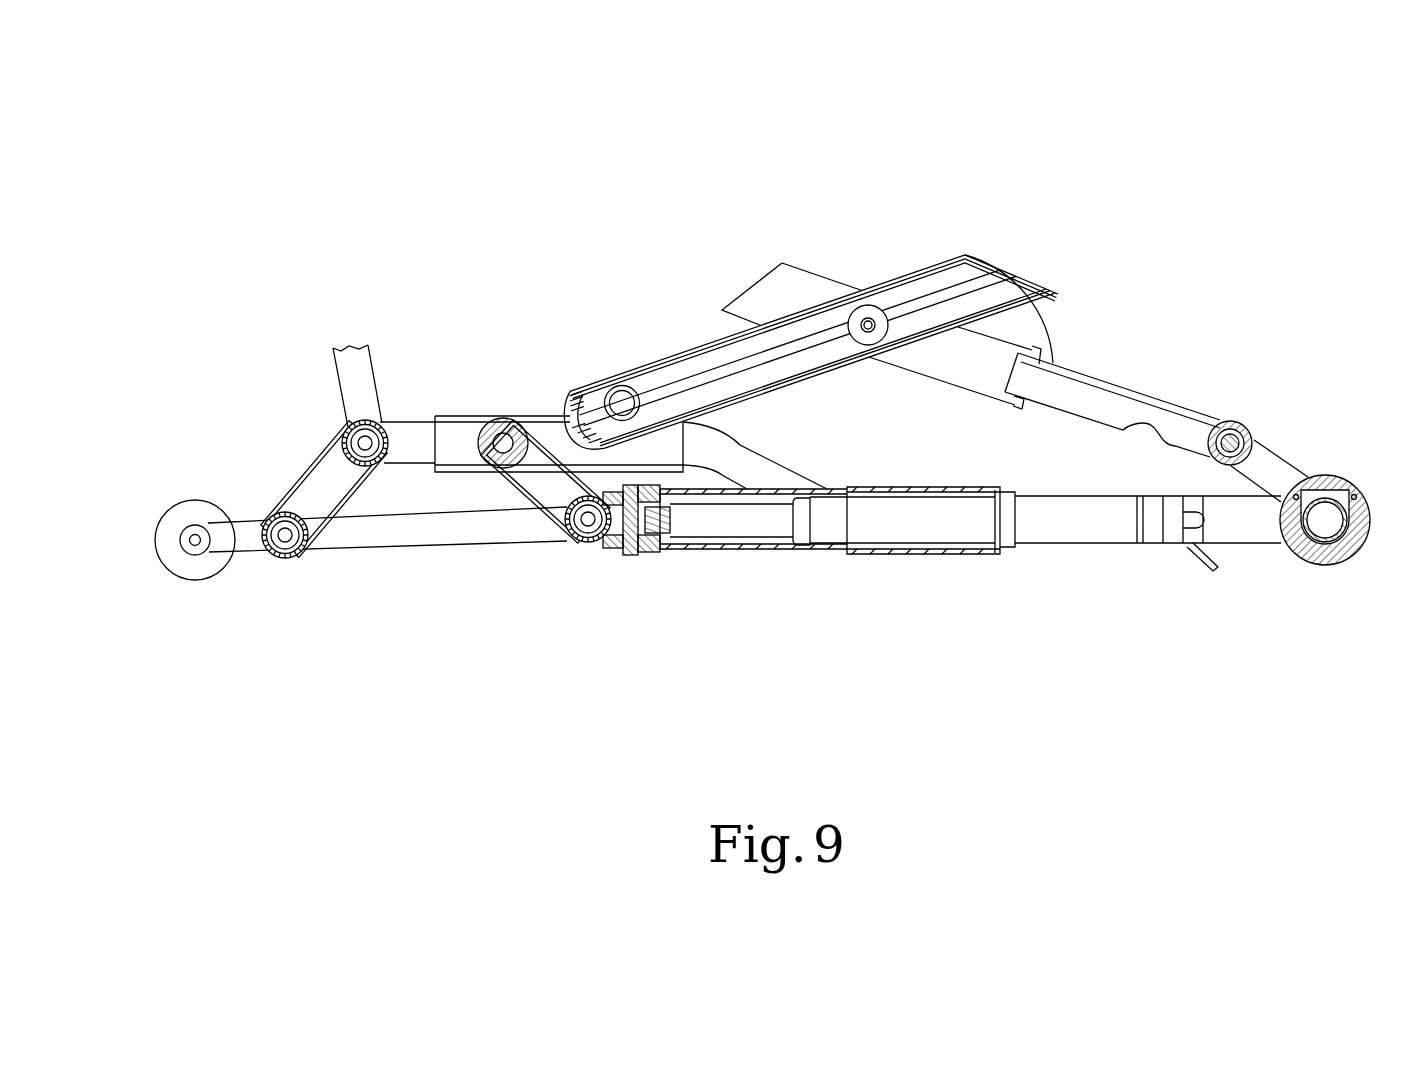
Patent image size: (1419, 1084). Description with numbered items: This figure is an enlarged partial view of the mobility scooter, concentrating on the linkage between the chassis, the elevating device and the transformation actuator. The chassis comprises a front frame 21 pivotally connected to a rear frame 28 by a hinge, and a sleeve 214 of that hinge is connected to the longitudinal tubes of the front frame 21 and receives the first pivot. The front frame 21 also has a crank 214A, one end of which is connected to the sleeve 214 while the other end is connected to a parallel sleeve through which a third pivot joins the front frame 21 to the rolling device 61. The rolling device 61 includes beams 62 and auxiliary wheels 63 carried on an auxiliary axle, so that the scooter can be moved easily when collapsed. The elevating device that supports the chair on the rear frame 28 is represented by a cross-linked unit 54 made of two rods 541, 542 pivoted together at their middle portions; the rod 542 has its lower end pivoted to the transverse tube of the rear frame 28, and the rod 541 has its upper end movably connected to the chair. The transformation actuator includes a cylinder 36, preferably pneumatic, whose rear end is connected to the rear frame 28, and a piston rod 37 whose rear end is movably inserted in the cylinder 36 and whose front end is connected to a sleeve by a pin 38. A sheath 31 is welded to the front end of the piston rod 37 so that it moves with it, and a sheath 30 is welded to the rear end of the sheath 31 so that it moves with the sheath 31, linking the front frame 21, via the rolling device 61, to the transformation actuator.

The front frame 21 is at (380, 377).
The sleeve 214 is at (345, 427).
The crank 214A is at (322, 488).
The rear frame 28 is at (1297, 562).
The sheath 30 is at (992, 555).
The sheath 31 is at (685, 550).
The cylinder 36 is at (930, 532).
The piston rod 37 is at (750, 525).
The pin 38 is at (623, 556).
The cross-linked unit 54 is at (943, 184).
The rod 541 is at (798, 328).
The rod 542 is at (953, 263).
The rolling device 61 is at (337, 559).
The beam 62 is at (412, 530).
The auxiliary wheel 63 is at (200, 563).